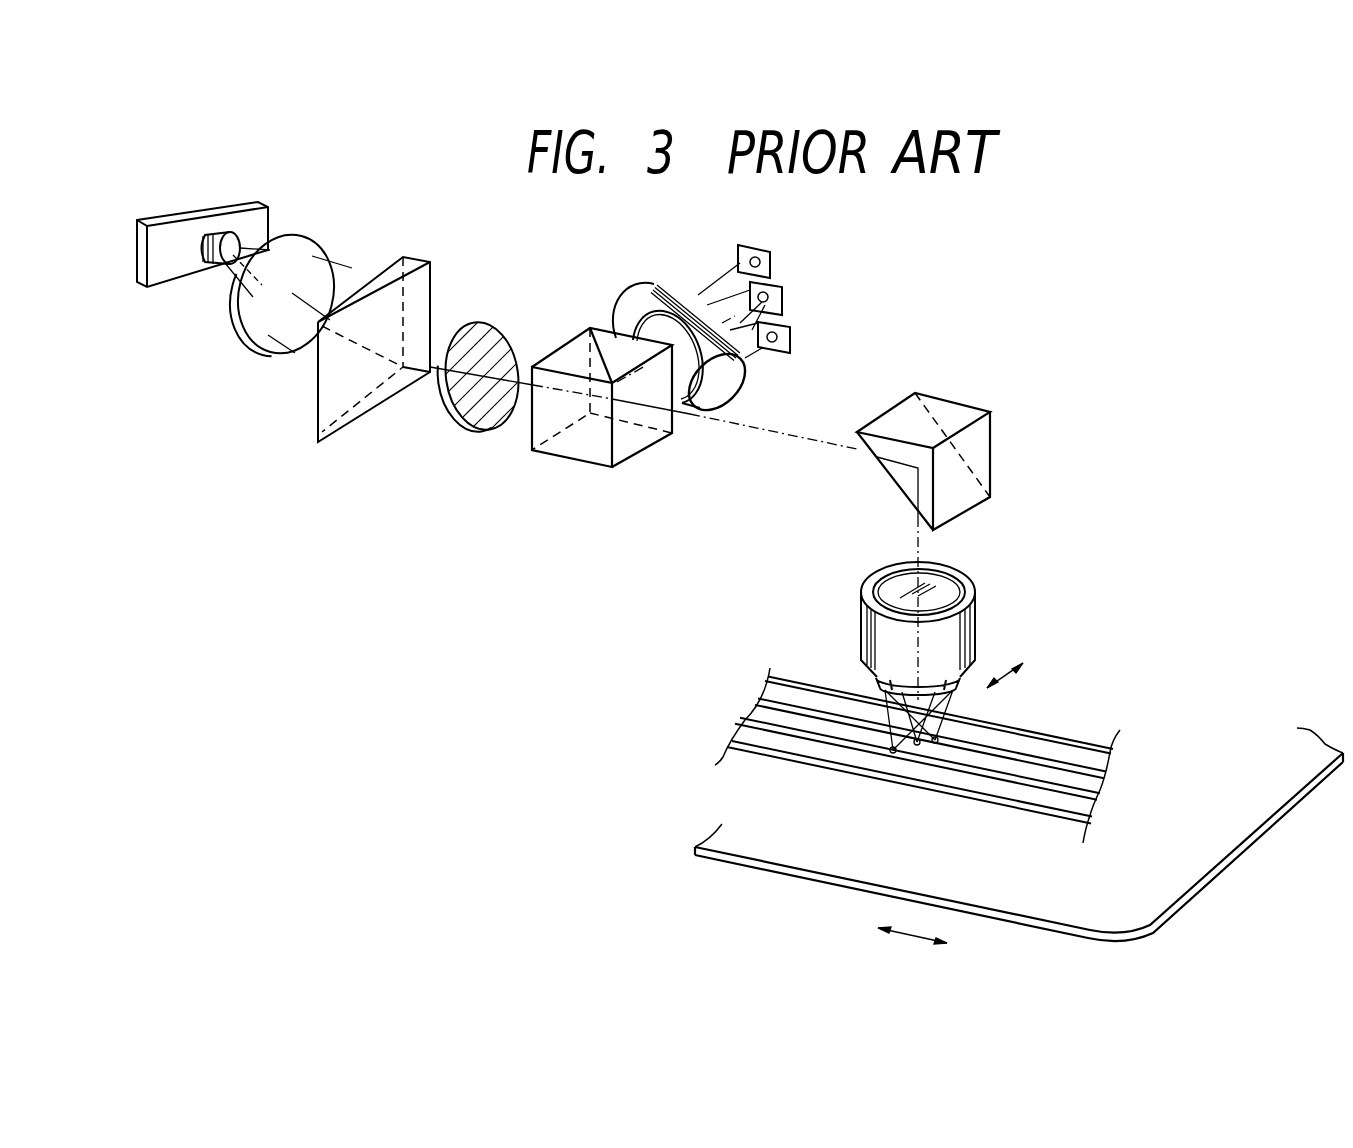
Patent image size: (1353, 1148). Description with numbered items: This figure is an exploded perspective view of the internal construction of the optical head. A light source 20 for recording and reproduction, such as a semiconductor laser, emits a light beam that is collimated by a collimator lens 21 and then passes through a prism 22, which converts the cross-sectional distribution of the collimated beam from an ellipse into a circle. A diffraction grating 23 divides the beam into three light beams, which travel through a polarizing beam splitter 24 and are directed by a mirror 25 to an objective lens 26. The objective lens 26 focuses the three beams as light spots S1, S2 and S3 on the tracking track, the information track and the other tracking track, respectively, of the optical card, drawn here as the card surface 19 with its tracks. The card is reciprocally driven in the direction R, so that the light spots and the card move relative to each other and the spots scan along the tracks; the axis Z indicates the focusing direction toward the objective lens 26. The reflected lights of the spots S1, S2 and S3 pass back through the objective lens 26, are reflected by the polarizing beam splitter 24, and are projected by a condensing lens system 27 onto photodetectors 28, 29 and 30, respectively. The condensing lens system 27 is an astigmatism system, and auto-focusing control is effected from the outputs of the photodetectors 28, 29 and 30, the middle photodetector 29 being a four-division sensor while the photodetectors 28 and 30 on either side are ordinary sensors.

The record carrier (disc) 19 is at (782, 852).
The light source 20 is at (267, 203).
The collimator lens 21 is at (317, 250).
The prism 22 is at (412, 265).
The diffraction grating 23 is at (497, 338).
The polarizing beam splitter 24 is at (573, 448).
The mirror 25 is at (978, 442).
The objective lens 26 is at (963, 578).
The condensing lens system 27 is at (643, 307).
The photodetector 28 is at (773, 262).
The photodetector 29 is at (780, 302).
The photodetector 30 is at (783, 333).
The light spot S1 is at (892, 754).
The light spot S2 is at (917, 746).
The light spot S3 is at (937, 745).
The direction R is at (912, 923).
The focus (Z) direction Z is at (1007, 684).